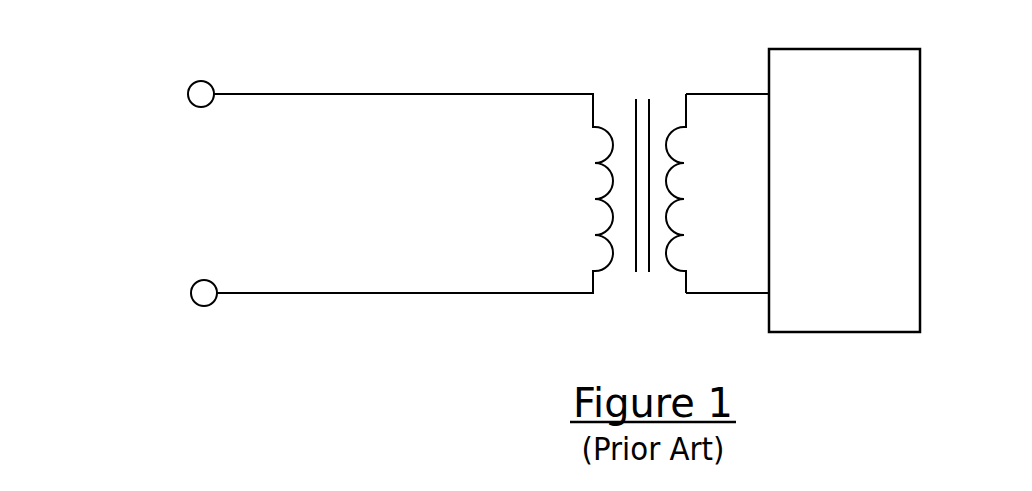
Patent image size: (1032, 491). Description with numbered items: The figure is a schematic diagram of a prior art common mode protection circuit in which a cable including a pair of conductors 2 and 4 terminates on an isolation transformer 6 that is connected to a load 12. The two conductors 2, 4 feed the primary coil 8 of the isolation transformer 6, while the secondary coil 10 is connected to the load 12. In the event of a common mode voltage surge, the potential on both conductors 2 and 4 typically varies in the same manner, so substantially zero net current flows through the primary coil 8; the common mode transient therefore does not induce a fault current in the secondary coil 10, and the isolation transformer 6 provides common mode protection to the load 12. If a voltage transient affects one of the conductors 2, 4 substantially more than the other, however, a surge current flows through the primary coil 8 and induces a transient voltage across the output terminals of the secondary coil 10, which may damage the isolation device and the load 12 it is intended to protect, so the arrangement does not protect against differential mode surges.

The conductor 2 is at (303, 93).
The conductor 4 is at (298, 293).
The isolation transformer 6 is at (658, 71).
The primary coil 8 is at (595, 293).
The secondary coil 10 is at (688, 293).
The load 12 is at (922, 158).